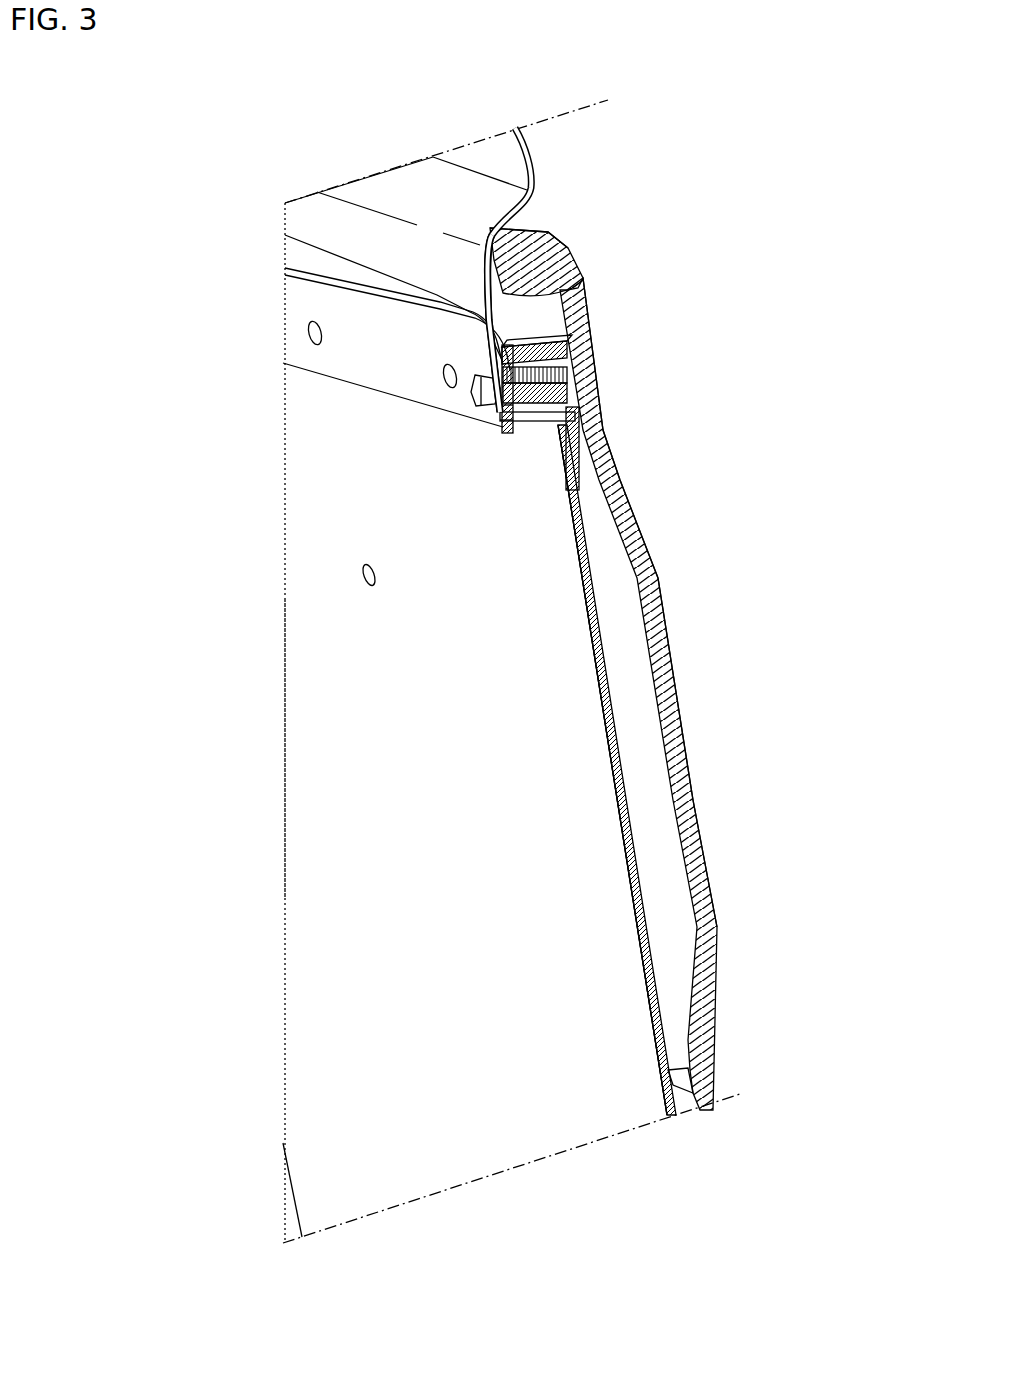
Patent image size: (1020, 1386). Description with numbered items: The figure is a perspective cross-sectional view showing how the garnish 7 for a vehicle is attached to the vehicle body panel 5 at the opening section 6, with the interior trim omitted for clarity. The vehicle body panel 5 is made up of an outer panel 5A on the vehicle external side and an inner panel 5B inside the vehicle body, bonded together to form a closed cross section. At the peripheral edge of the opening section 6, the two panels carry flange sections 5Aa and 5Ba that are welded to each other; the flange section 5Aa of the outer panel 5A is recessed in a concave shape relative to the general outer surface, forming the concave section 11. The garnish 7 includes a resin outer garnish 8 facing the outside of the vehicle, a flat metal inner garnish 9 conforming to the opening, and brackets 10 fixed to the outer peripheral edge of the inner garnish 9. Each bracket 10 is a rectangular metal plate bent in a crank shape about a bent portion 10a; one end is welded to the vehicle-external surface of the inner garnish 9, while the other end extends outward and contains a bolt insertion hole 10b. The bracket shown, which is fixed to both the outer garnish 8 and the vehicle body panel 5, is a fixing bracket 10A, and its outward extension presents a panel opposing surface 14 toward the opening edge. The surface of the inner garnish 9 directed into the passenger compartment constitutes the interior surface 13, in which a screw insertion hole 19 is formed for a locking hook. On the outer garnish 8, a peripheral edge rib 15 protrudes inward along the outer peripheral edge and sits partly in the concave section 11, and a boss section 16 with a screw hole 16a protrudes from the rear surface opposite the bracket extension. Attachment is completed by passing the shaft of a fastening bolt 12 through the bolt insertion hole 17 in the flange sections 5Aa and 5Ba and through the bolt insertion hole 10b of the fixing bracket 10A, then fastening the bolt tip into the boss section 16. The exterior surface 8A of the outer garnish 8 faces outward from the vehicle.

The vehicle body panel 5 is at (542, 152).
The outer panel 5A is at (534, 190).
The flange section 5Aa is at (515, 432).
The inner panel 5B is at (327, 275).
The flange section 5Ba is at (502, 437).
The opening section 6 is at (337, 383).
The garnish for a vehicle 7 is at (658, 518).
The outer garnish 8 is at (667, 620).
The outer panel surface 8A is at (687, 738).
The inner garnish 9 is at (615, 790).
The bracket 10 is at (612, 770).
The fixing bracket 10A is at (594, 461).
The bent portion 10a is at (545, 425).
The bolt insertion hole 10b is at (570, 375).
The concave section 11 is at (552, 237).
The fastening bolt 12 is at (445, 393).
The interior surface 13 is at (363, 737).
The panel opposing surface 14 is at (503, 420).
The peripheral edge rib 15 is at (577, 282).
The boss section 16 is at (538, 333).
The screw hole 16a is at (560, 352).
The bolt insertion hole 17 is at (500, 410).
The screw insertion hole 19 is at (360, 580).